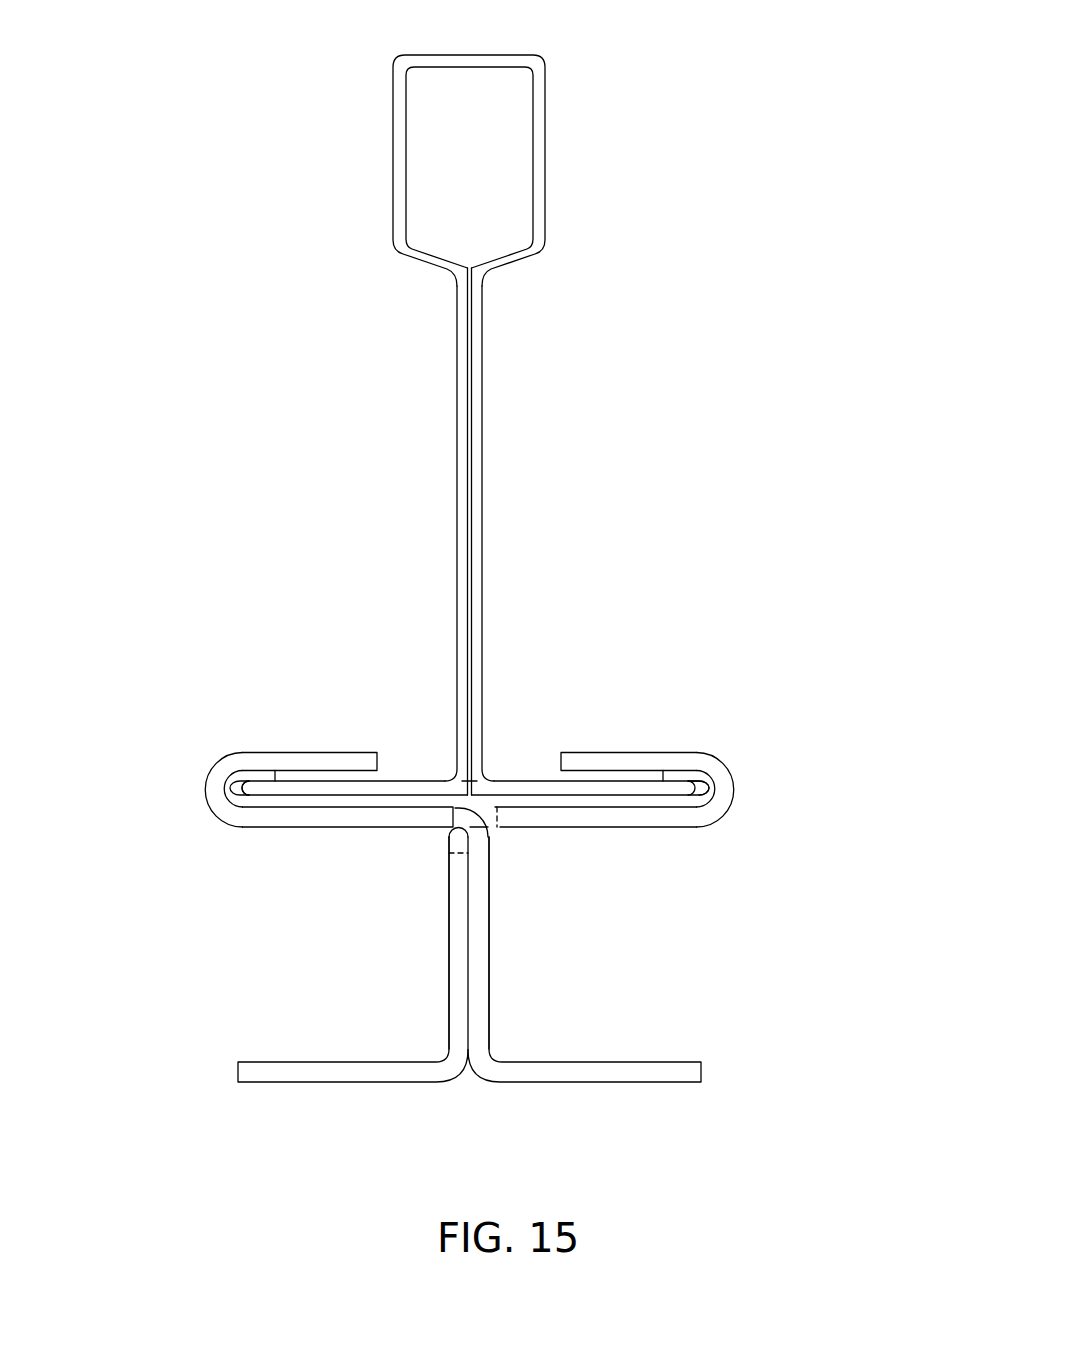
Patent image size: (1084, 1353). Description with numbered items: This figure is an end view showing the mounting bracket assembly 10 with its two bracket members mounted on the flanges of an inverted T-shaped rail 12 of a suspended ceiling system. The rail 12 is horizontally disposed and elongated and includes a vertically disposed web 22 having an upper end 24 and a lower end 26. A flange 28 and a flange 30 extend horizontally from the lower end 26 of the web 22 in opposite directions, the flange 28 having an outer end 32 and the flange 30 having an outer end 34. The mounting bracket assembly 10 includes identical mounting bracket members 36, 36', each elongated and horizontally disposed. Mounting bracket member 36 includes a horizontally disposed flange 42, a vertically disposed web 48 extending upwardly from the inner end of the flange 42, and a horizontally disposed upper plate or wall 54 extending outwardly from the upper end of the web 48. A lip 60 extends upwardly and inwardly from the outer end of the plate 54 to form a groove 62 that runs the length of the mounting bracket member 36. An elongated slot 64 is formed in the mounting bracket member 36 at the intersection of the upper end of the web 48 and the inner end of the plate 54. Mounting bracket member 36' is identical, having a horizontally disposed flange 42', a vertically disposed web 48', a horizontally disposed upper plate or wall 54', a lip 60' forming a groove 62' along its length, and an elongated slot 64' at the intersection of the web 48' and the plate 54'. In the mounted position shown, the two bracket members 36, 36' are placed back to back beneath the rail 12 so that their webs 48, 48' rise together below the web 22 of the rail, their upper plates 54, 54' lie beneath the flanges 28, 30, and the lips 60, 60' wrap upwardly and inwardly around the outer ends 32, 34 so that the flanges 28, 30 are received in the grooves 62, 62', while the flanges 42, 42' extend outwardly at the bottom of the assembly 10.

The mounting bracket assembly 10 is at (504, 828).
The inverted T-shaped rail 12 is at (447, 425).
The web 22 is at (490, 320).
The upper end 24 is at (476, 270).
The lower end 26 is at (483, 782).
The flange 28 is at (585, 777).
The flange 30 is at (334, 690).
The outer end 32 is at (708, 777).
The outer end 34 is at (245, 786).
The mounting bracket member 36 is at (672, 844).
The mounting bracket member 36' is at (251, 842).
The flange 42 is at (334, 959).
The flange 42' is at (645, 959).
The web 48 is at (375, 943).
The web 48' is at (562, 943).
The upper plate 54 is at (649, 856).
The upper plate 54' is at (291, 851).
The lip 60 is at (657, 722).
The lip 60' is at (310, 673).
The groove 62 is at (769, 792).
The groove 62' is at (184, 751).
The slot 64 is at (377, 872).
The slot 64' is at (518, 861).